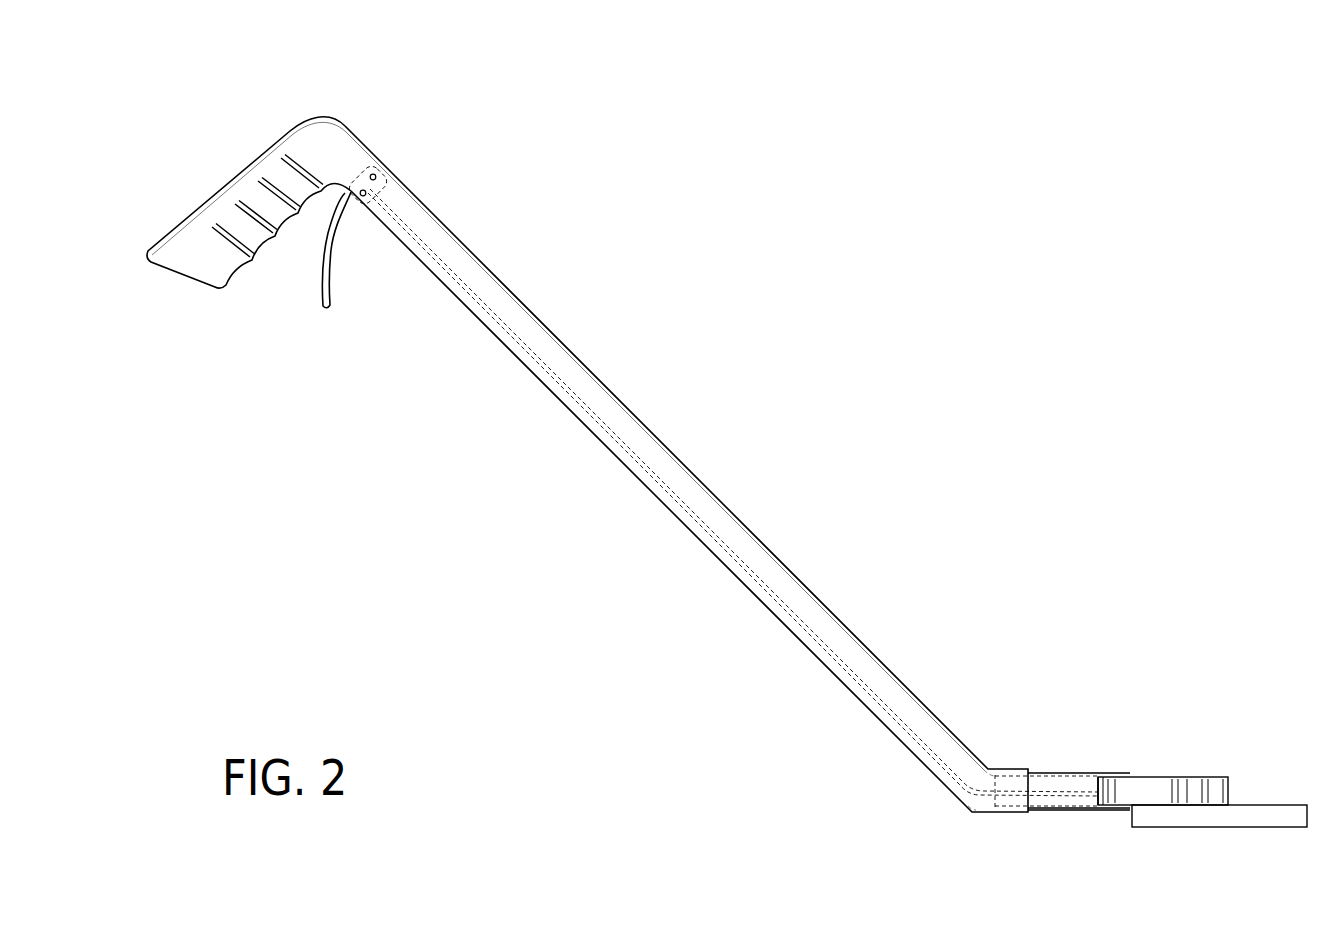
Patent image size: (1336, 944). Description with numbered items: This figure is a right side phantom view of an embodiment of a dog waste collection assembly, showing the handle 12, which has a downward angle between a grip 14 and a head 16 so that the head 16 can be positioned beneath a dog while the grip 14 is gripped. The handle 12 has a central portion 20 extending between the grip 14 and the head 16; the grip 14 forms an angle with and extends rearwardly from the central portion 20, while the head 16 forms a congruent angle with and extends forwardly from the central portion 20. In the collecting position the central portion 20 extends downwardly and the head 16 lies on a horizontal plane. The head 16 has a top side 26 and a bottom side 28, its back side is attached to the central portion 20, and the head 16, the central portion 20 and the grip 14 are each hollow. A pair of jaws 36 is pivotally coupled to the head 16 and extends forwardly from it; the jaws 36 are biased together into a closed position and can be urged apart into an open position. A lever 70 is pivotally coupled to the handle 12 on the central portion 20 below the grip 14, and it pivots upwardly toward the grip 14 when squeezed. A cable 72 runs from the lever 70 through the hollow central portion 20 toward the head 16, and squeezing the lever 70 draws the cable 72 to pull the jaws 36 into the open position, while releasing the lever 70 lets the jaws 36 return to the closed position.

The handle 12 is at (370, 150).
The grip 14 is at (236, 176).
The head 16 is at (1113, 775).
The central portion 20 is at (613, 393).
The top side 26 is at (1047, 773).
The bottom side 28 is at (1090, 809).
The jaws 36 is at (1220, 777).
The lever 70 is at (320, 277).
The cable 72 is at (767, 582).